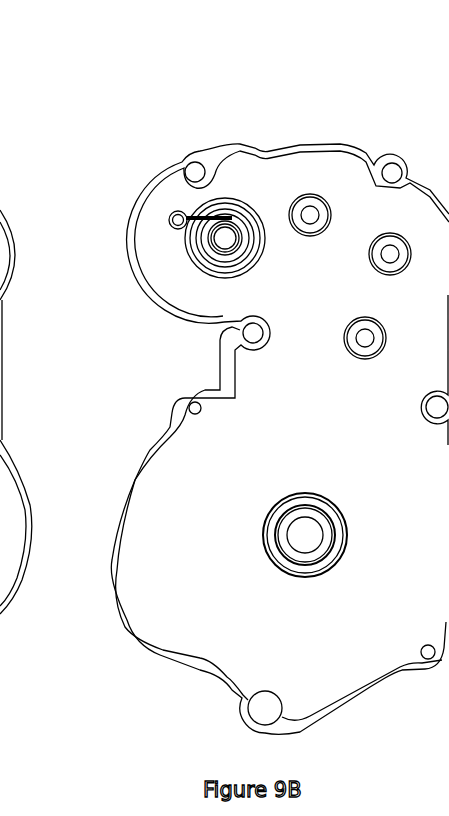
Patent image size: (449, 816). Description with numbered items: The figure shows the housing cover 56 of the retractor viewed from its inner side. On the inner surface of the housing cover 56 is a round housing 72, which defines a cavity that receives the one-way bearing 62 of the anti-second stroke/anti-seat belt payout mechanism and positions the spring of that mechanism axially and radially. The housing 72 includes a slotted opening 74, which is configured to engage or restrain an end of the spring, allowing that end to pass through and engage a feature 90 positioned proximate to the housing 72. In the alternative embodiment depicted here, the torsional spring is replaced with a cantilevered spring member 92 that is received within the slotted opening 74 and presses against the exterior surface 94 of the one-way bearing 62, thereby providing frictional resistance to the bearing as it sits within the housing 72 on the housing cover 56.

The housing cover 56 is at (285, 192).
The one-way bearing 62 is at (240, 240).
The housing 72 is at (244, 231).
The slotted opening 74 is at (185, 212).
The feature 90 is at (172, 219).
The cantilevered spring member 92 is at (203, 215).
The exterior surface 94 is at (218, 255).